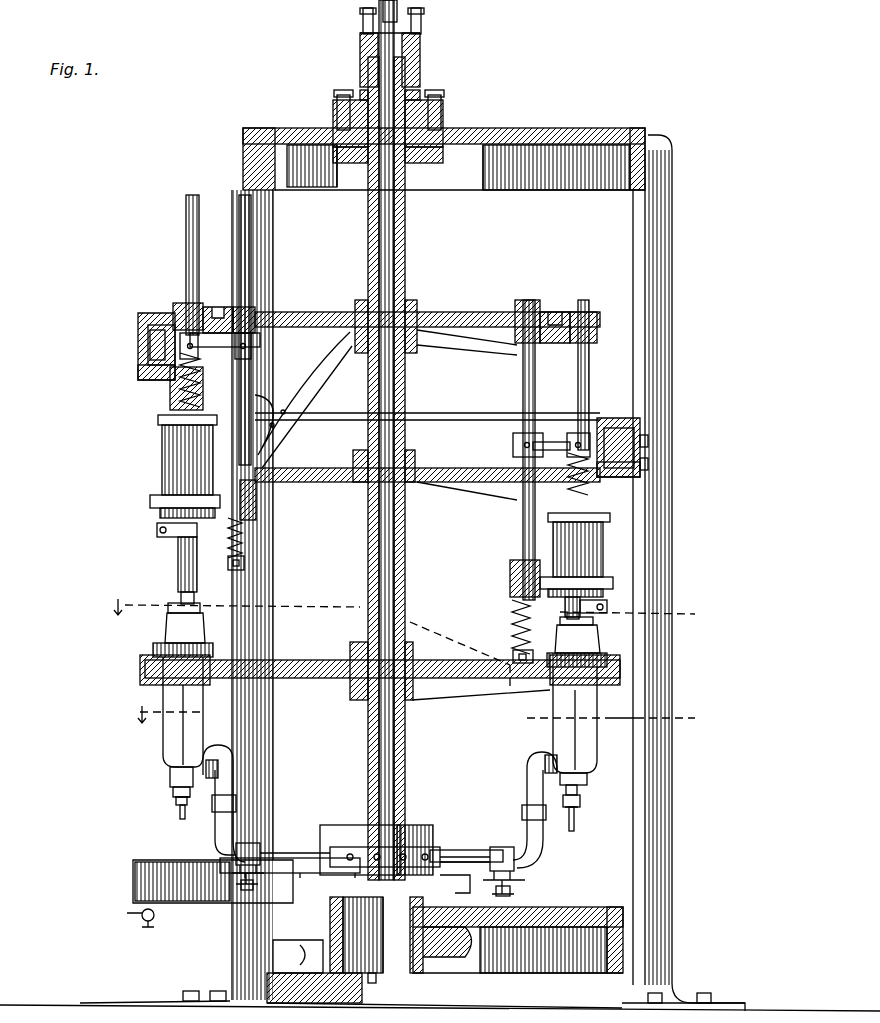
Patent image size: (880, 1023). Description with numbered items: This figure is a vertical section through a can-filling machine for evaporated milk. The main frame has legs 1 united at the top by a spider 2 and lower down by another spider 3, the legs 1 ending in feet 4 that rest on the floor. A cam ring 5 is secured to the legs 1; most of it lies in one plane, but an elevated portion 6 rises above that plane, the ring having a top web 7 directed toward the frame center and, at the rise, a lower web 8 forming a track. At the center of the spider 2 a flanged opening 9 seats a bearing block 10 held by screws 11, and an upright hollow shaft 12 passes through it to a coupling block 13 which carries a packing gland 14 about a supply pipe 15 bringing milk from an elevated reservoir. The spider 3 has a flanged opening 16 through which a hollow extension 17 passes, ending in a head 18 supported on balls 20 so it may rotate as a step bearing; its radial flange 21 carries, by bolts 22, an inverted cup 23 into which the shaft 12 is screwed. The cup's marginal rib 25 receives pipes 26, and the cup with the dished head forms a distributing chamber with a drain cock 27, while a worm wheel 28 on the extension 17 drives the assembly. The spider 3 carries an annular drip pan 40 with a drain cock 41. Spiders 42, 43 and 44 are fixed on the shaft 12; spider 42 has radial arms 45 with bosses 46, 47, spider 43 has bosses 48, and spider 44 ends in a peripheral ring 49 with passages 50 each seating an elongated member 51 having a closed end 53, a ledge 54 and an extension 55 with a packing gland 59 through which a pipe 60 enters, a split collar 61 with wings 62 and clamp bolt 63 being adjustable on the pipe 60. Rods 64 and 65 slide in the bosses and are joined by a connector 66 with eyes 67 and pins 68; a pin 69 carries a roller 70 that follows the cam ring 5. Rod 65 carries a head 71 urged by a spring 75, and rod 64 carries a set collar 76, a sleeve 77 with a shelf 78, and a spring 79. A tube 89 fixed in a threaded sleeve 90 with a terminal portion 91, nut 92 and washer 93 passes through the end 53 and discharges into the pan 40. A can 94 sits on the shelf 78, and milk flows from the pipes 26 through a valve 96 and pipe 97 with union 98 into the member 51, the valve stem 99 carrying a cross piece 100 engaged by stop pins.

The legs 1 is at (672, 764).
The spider 2 is at (540, 128).
The spider 3 is at (538, 990).
The feet 4 is at (735, 990).
The cam ring 5 is at (444, 413).
The elevated portion 6 is at (148, 355).
The top web 7 is at (152, 313).
The web 8 is at (170, 395).
The flanged opening 9 is at (443, 160).
The bearing block 10 is at (420, 103).
The screws 11 is at (337, 99).
The hollow shaft 12 is at (406, 228).
The coupling block 13 is at (360, 51).
The packing gland 14 is at (426, 19).
The pipe or tube 15 is at (383, 6).
The flanged opening 16 is at (423, 935).
The hollow extension 17 is at (383, 925).
The head 18 is at (433, 830).
The balls 20 is at (460, 893).
The radial flange 21 is at (470, 850).
The bolts 22 is at (310, 858).
The inverted cup 23 is at (343, 825).
The marginal rib 25 is at (400, 847).
The pipes 26 is at (285, 853).
The drain cock 27 is at (376, 982).
The worm wheel 28 is at (290, 973).
The drip pan 40 is at (133, 883).
The drain cock 41 is at (144, 920).
The spider 42 is at (448, 306).
The spider 43 is at (448, 464).
The spider 44 is at (440, 659).
The radial arms 45 is at (216, 307).
The boss 46 is at (180, 303).
The boss 47 is at (255, 310).
The bosses 48 is at (272, 452).
The peripheral ring 49 is at (140, 666).
The passages 50 is at (150, 685).
The elongated member 51 is at (163, 740).
The end 53 is at (170, 775).
The ledge 54 is at (170, 640).
The extension 55 is at (204, 645).
The packing gland 59 is at (210, 602).
The pipe or tube 60 is at (181, 596).
The split collar 61 is at (180, 540).
The wings 62 is at (160, 532).
The clamp bolt or screw 63 is at (157, 528).
The rod 64 is at (251, 222).
The rod 65 is at (186, 224).
The connector 66 is at (240, 333).
The eyes 67 is at (188, 343).
The pins 68 is at (180, 342).
The pin 69 is at (150, 335).
The roller 70 is at (140, 372).
The head 71 is at (158, 422).
The spring 75 is at (180, 400).
The set collar 76 is at (244, 563).
The sleeve 77 is at (256, 505).
The shelf 78 is at (150, 500).
The spring 79 is at (242, 540).
The tube 89 is at (180, 815).
The threaded sleeve 90 is at (176, 800).
The terminal portion 91 is at (176, 800).
The nut 92 is at (190, 792).
The washer 93 is at (168, 774).
The can 94 is at (162, 472).
The valve 96 is at (252, 843).
The pipe 97 is at (233, 770).
The union 98 is at (212, 808).
The stem 99 is at (234, 870).
The cross piece 100 is at (244, 890).